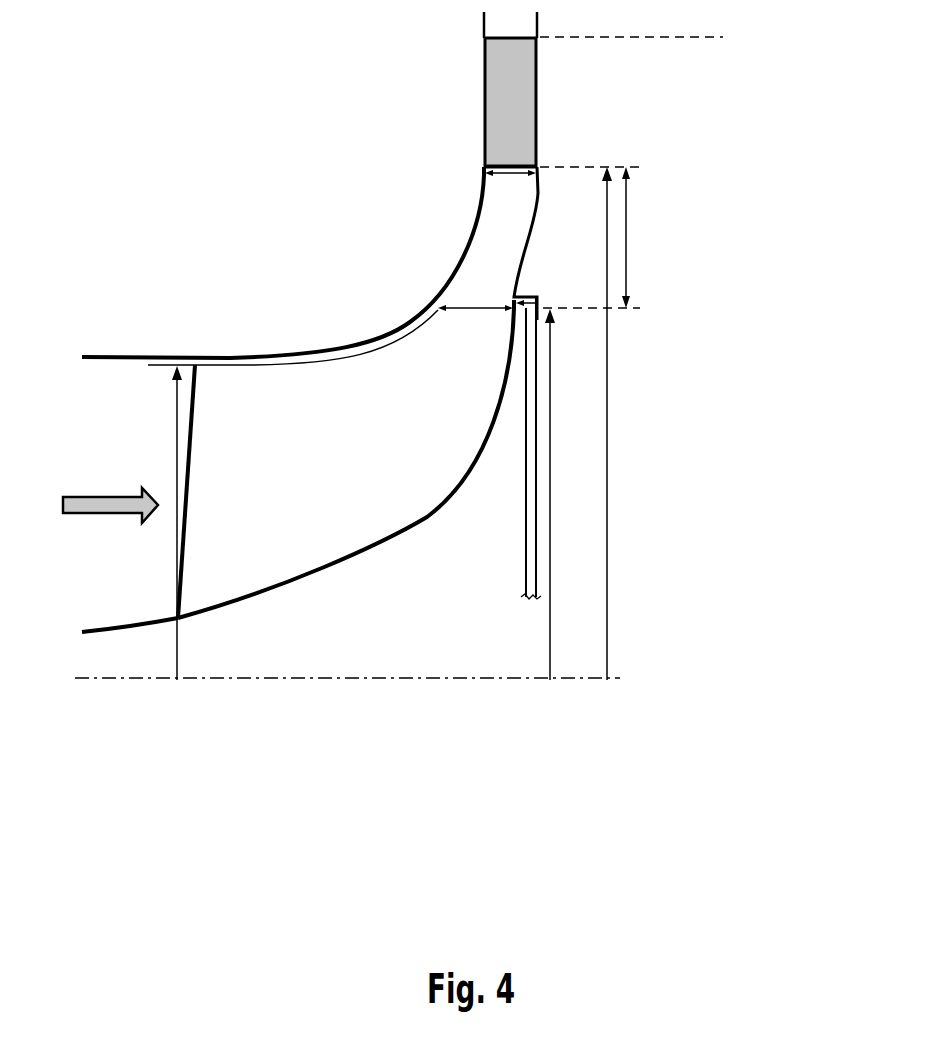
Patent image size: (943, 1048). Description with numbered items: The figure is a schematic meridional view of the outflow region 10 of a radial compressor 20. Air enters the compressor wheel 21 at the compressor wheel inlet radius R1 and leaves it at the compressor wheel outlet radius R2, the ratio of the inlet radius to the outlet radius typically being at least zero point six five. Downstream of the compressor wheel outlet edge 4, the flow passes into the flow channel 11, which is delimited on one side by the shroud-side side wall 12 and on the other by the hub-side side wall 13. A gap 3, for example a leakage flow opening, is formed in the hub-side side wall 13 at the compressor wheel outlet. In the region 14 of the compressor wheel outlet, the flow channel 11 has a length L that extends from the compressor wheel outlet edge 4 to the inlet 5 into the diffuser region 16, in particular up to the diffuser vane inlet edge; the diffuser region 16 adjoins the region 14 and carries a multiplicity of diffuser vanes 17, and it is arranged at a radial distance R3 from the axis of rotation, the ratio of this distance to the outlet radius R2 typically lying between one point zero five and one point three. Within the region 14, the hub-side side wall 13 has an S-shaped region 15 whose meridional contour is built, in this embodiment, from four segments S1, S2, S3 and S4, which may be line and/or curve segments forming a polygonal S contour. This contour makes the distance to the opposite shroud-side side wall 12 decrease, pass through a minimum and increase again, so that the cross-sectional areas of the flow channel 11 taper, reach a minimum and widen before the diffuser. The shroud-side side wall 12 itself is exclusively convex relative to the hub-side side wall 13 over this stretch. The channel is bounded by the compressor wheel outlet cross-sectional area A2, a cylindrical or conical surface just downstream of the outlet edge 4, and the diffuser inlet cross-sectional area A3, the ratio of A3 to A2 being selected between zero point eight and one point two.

The compressor 20 is at (110, 58).
The diffuser vanes 17 is at (503, 75).
The inlet into the diffuser region 5 is at (521, 163).
The diffuser region 16 is at (640, 37).
The outflow region 10 is at (723, 37).
The shroud-side side wall 12 is at (480, 208).
The hub-side side wall 13 is at (537, 195).
The flow channel 11 is at (514, 231).
The region of the compressor wheel outlet 14 is at (640, 167).
The S-shaped region 15 is at (510, 257).
The compressor wheel 21 is at (338, 382).
The gap 3 is at (538, 303).
The compressor wheel outlet edge 4 is at (480, 316).
The diffuser inlet cross-sectional area A3 is at (510, 165).
The compressor wheel outlet cross-sectional area A2 is at (440, 305).
The first segment S1 is at (516, 283).
The second segment S2 is at (526, 250).
The third segment S3 is at (532, 222).
The fourth segment S4 is at (540, 180).
The length of the flow channel L is at (634, 237).
The compressor wheel inlet radius R1 is at (156, 523).
The compressor wheel outlet radius R2 is at (567, 494).
The radial distance R3 is at (625, 423).